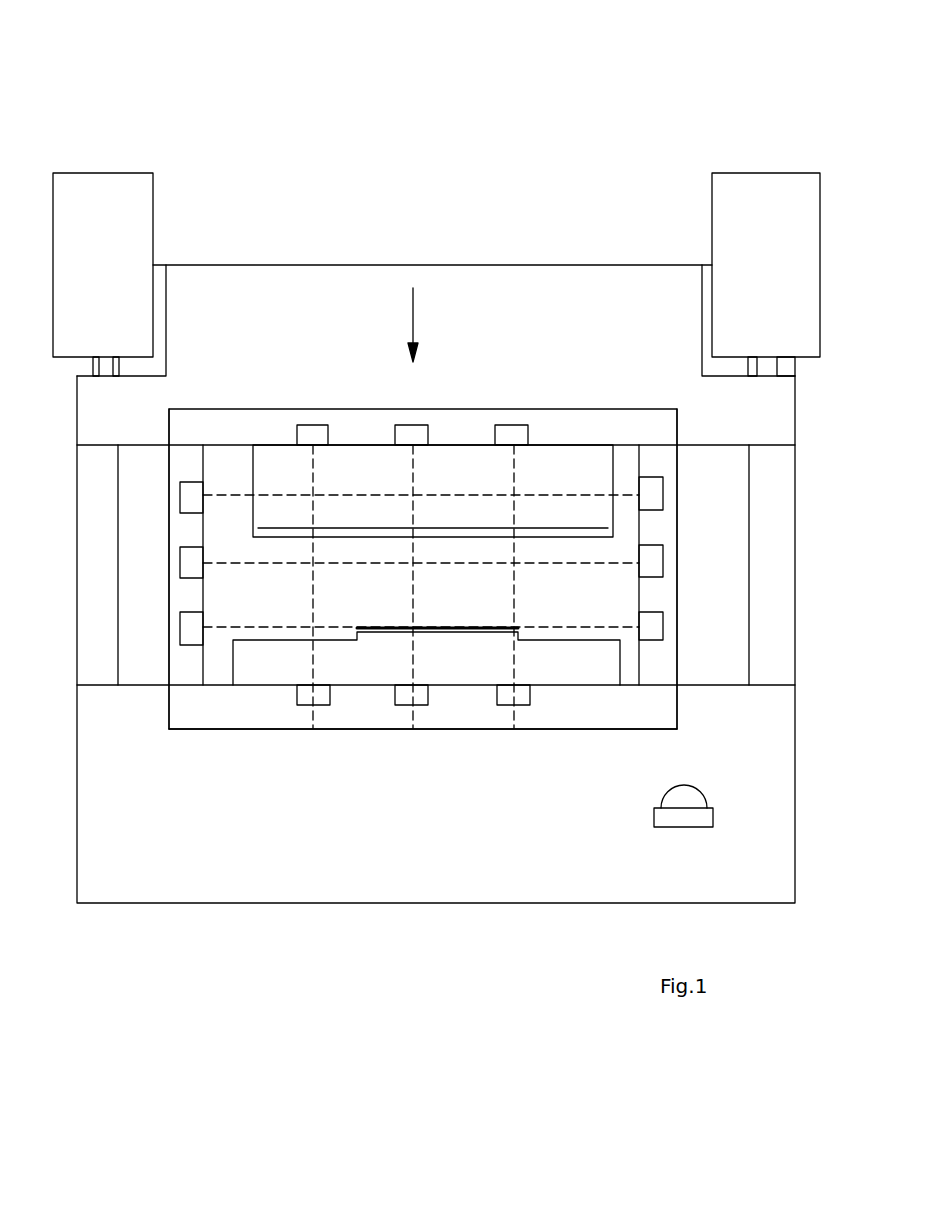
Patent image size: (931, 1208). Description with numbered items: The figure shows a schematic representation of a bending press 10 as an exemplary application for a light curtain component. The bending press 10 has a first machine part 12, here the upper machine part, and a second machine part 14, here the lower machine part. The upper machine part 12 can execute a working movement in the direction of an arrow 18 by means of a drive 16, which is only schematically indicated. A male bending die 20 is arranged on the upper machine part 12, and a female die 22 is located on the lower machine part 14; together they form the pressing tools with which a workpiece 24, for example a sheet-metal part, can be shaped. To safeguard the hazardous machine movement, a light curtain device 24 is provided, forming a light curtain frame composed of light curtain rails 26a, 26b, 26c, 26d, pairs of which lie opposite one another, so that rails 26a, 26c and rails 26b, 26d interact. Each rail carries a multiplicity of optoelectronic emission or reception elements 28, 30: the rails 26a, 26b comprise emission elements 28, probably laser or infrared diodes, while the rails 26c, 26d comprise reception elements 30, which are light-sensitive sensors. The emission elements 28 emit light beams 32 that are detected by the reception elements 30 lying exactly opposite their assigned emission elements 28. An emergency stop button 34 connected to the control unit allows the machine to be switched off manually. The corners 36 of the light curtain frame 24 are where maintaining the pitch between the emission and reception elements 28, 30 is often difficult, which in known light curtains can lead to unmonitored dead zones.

The bending press 10 is at (600, 170).
The first machine part 12 is at (350, 288).
The second machine part 14 is at (416, 878).
The drive 16 is at (105, 185).
The arrow 18 is at (415, 308).
The male bending die 20 is at (360, 450).
The female die 22 is at (372, 660).
The workpiece 24 is at (570, 407).
The light curtain rail 26a is at (235, 425).
The light curtain rail 26b is at (665, 520).
The light curtain rail 26c is at (553, 714).
The light curtain rail 26d is at (180, 592).
The emission elements 28 is at (308, 435).
The reception elements 30 is at (185, 497).
The light beams 32 is at (413, 483).
The emergency stop button 34 is at (702, 817).
The corners 36 is at (170, 412).